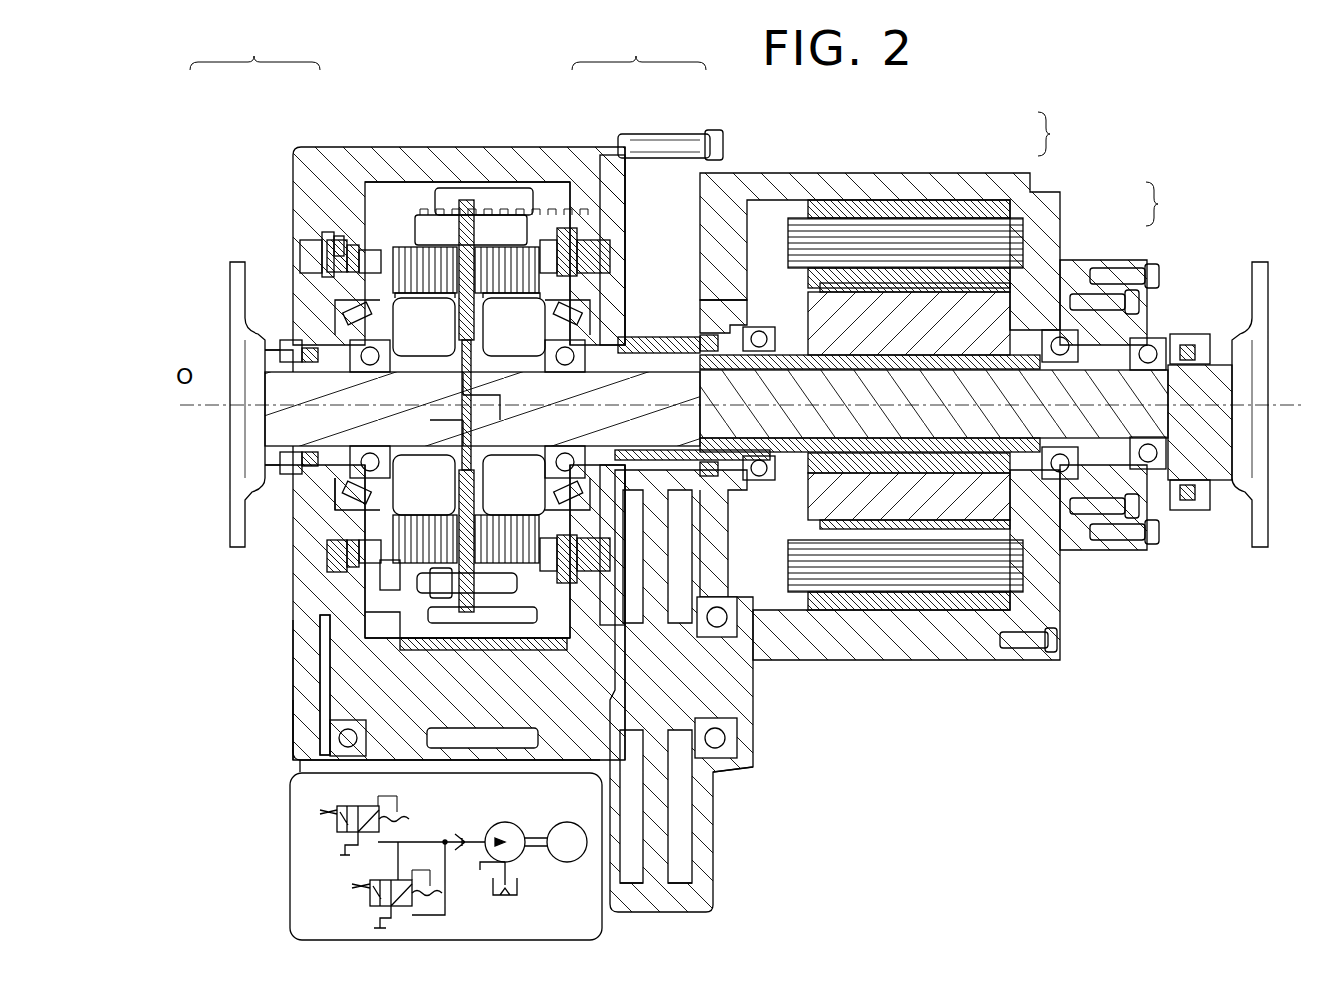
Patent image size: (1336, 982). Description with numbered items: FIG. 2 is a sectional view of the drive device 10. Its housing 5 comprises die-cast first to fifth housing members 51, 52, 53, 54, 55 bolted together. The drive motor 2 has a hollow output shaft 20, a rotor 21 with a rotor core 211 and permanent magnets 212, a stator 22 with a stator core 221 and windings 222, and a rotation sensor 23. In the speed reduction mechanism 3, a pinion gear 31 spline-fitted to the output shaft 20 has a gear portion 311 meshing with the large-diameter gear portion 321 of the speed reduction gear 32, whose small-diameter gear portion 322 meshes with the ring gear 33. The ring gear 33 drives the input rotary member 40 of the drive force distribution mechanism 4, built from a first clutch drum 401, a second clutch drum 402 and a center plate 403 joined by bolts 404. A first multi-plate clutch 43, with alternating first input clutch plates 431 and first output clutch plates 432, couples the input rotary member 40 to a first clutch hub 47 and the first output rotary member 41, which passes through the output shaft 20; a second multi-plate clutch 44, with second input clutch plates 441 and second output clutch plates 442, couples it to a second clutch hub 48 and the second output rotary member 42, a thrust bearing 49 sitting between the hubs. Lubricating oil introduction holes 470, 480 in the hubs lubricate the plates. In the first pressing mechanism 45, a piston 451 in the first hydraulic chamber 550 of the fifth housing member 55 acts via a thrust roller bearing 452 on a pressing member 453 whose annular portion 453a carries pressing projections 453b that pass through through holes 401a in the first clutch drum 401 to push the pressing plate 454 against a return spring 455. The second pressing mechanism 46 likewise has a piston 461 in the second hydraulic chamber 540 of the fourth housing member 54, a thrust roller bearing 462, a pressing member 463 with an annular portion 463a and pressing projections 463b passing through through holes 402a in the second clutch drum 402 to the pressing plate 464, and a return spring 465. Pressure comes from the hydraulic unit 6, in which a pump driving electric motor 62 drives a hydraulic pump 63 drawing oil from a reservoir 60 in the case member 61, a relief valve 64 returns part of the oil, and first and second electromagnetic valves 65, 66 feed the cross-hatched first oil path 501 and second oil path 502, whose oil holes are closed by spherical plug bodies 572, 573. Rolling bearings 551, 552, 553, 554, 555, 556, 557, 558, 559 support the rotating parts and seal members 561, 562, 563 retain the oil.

The drive motor 2 is at (835, 200).
The speed reduction mechanism 3 is at (700, 835).
The drive force distribution mechanism 4 is at (600, 612).
The housing 5 is at (816, 676).
The hydraulic unit 6 is at (417, 856).
The drive device 10 is at (1138, 132).
The output shaft 20 is at (795, 480).
The rotor 21 is at (1166, 204).
The stator 22 is at (1058, 134).
The rotation sensor 23 is at (1100, 330).
The pinion gear 31 is at (660, 345).
The speed reduction gear 32 is at (738, 728).
The ring gear 33 is at (505, 594).
The input rotary member 40 is at (420, 585).
The first output rotary member 41 is at (1260, 445).
The second output rotary member 42 is at (232, 420).
The first multi-plate clutch 43 is at (515, 512).
The second multi-plate clutch 44 is at (418, 512).
The first pressing mechanism 45 is at (548, 622).
The second pressing mechanism 46 is at (385, 592).
The first clutch hub 47 is at (540, 410).
The second clutch hub 48 is at (458, 428).
The thrust bearing 49 is at (465, 362).
The first housing member 51 is at (1150, 480).
The second housing member 52 is at (1060, 622).
The third housing member 53 is at (860, 652).
The fourth housing member 54 is at (300, 722).
The fifth housing member 55 is at (703, 300).
The reservoir 60 is at (520, 890).
The case member 61 is at (290, 832).
The pump driving electric motor 62 is at (567, 822).
The hydraulic pump 63 is at (498, 822).
The relief valve 64 is at (458, 836).
The first electromagnetic valve 65 is at (352, 806).
The second electromagnetic valve 66 is at (384, 880).
The rotor core 211 is at (1000, 312).
The permanent magnets 212 is at (1010, 287).
The stator core 221 is at (920, 218).
The windings 222 is at (905, 258).
The gear portion 311 is at (690, 340).
The large-diameter gear portion 321 is at (686, 880).
The small-diameter gear portion 322 is at (540, 742).
The first clutch drum 401 is at (480, 215).
The through holes 401a is at (585, 610).
The second clutch drum 402 is at (400, 215).
The through holes 402a is at (360, 560).
The center plate 403 is at (437, 190).
The bolts 404 is at (470, 623).
The first input clutch plates 431 is at (510, 300).
The first output clutch plates 432 is at (500, 294).
The second input clutch plates 441 is at (425, 300).
The second output clutch plates 442 is at (440, 294).
The piston 451 is at (612, 230).
The thrust roller bearing 452 is at (700, 125).
The pressing member 453 is at (639, 53).
The annular portion 453a is at (595, 240).
The pressing projections 453b is at (567, 228).
The pressing plate 454 is at (548, 240).
The return spring 455 is at (530, 232).
The piston 461 is at (340, 250).
The thrust roller bearing 462 is at (325, 240).
The pressing member 463 is at (255, 53).
The annular portion 463a is at (335, 245).
The pressing projections 463b is at (352, 245).
The pressing plate 464 is at (375, 250).
The return spring 465 is at (368, 238).
The lubricating oil introduction holes 470 is at (497, 515).
The lubricating oil introduction holes 480 is at (430, 515).
The first oil path 501 is at (425, 615).
The second oil path 502 is at (300, 665).
The second hydraulic chamber 540 is at (330, 258).
The first hydraulic chamber 550 is at (612, 262).
The rolling bearing 551 is at (1152, 480).
The rolling bearing 552 is at (1062, 482).
The rolling bearing 553 is at (762, 327).
The rolling bearing 554 is at (575, 365).
The rolling bearing 555 is at (530, 365).
The rolling bearing 556 is at (290, 464).
The rolling bearing 557 is at (340, 505).
The rolling bearing 558 is at (735, 772).
The rolling bearing 559 is at (340, 742).
The seal member 561 is at (1205, 334).
The seal member 562 is at (292, 340).
The seal member 563 is at (705, 335).
The spherical plug body 572 is at (322, 690).
The spherical plug body 573 is at (300, 768).